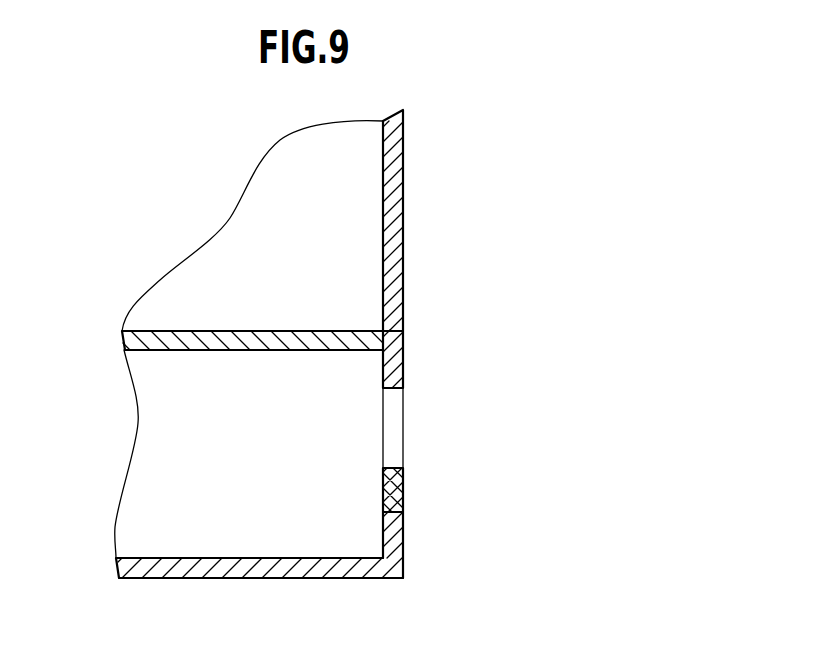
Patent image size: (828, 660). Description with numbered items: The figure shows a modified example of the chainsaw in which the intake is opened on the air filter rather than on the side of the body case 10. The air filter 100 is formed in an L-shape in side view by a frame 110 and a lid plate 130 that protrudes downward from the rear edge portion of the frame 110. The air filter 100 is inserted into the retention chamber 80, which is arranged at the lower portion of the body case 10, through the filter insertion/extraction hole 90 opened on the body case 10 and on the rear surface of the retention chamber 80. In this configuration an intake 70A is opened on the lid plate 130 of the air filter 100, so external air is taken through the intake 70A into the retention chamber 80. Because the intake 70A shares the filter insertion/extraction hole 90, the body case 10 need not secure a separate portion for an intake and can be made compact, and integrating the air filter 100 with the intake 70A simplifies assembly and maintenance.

The body case 10 is at (397, 152).
The intake 70A is at (390, 389).
The retention chamber 80 is at (216, 557).
The filter insertion/extraction hole 90 is at (403, 495).
The air filter 100 is at (239, 299).
The frame 110 is at (178, 338).
The lid plate 130 is at (396, 476).